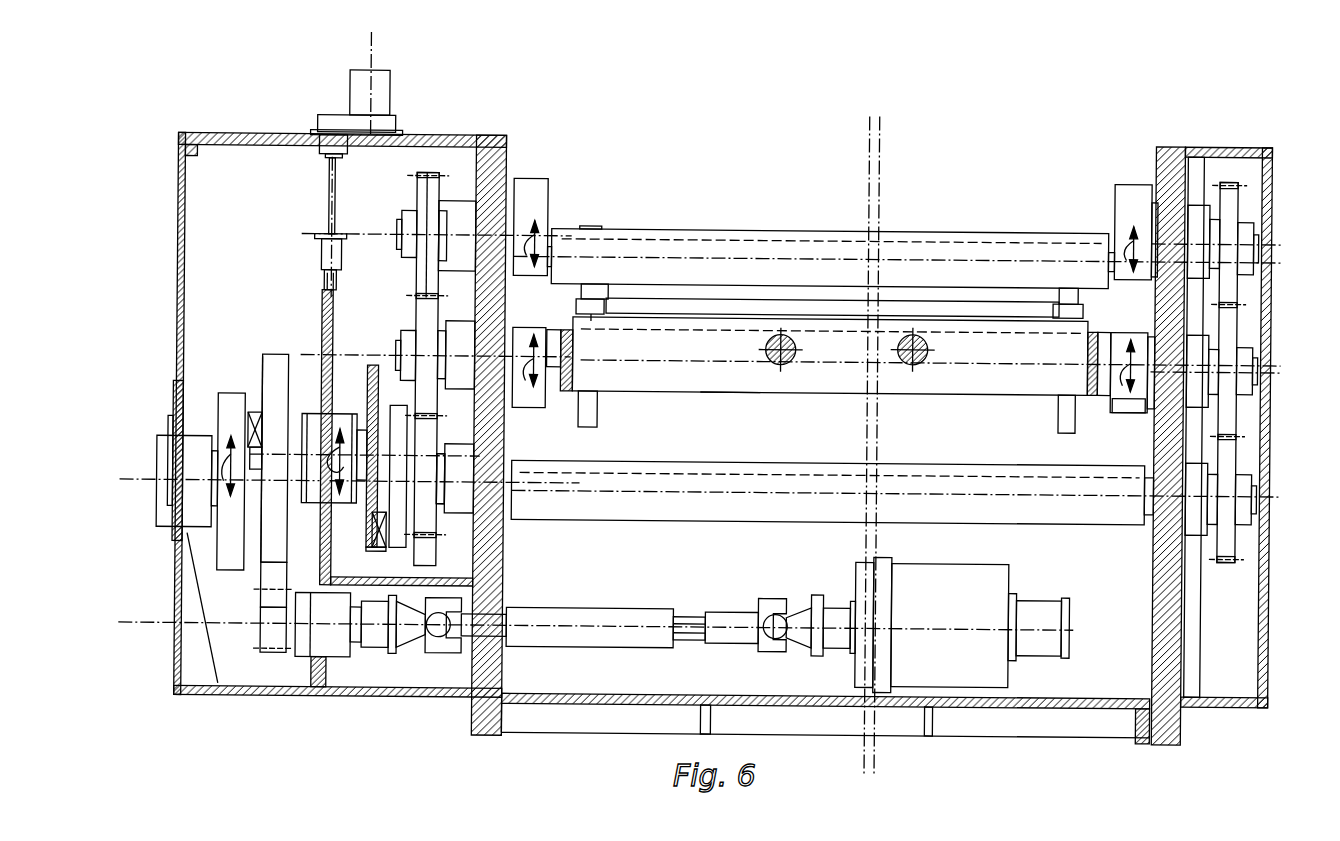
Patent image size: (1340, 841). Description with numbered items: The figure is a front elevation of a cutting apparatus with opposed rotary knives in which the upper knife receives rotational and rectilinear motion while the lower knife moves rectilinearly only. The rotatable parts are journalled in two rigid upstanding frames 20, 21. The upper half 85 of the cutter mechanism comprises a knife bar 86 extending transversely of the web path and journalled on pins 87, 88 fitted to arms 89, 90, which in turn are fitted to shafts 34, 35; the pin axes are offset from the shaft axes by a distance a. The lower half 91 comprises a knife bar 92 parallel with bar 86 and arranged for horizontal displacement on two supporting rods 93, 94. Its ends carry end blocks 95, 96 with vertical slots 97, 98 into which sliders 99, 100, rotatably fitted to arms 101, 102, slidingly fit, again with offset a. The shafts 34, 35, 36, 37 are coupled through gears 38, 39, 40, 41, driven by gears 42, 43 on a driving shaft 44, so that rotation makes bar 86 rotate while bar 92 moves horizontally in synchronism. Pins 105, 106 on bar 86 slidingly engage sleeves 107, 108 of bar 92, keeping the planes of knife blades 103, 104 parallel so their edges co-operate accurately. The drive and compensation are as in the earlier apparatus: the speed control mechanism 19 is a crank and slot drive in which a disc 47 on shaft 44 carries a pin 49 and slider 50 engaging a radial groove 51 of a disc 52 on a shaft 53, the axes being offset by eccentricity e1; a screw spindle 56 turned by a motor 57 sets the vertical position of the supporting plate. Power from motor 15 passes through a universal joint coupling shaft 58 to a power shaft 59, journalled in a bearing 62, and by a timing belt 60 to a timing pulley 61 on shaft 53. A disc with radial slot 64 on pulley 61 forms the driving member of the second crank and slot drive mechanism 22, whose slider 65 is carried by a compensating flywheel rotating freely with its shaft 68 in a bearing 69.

The motor 15 is at (1000, 585).
The speed control mechanism 19 is at (393, 385).
The frame 20 is at (494, 152).
The frame 21 is at (1173, 155).
The second crank and slot drive mechanism 22 is at (238, 378).
The shaft 34 is at (438, 233).
The shaft 35 is at (1218, 233).
The shaft 36 is at (438, 345).
The shaft 37 is at (1228, 382).
The gear 38 is at (423, 190).
The gear 39 is at (1237, 204).
The gear 40 is at (423, 313).
The gear 41 is at (1230, 333).
The gear 42 is at (427, 540).
The gear 43 is at (1228, 553).
The driving shaft 44 is at (722, 512).
The disc 47 is at (393, 543).
The pin 49 is at (378, 554).
The slider 50 is at (378, 533).
The radial groove 51 is at (383, 372).
The disc 52 is at (365, 404).
The shaft 53 is at (298, 435).
The screw spindle 56 is at (327, 173).
The motor 57 is at (385, 86).
The universal joint coupling shaft 58 is at (575, 620).
The power shaft 59 is at (268, 632).
The timing belt 60 is at (270, 586).
The timing pulley 61 is at (282, 362).
The bearing 62 is at (338, 647).
The radial slot 64 is at (260, 385).
The slider 65 is at (245, 425).
The shaft 68 is at (172, 478).
The bearing 69 is at (170, 512).
The upper half of the cutter mechanism 85 is at (762, 205).
The knife bar 86 is at (693, 246).
The pin 87 is at (551, 256).
The pin 88 is at (1107, 260).
The arm 89 is at (530, 178).
The arm 90 is at (1130, 190).
The lower half of the cutter mechanism 91 is at (748, 405).
The knife bar 92 is at (853, 385).
The supporting rod 93 is at (793, 367).
The supporting rod 94 is at (918, 372).
The end block 95 is at (573, 332).
The end block 96 is at (1092, 337).
The vertical slot 97 is at (560, 385).
The vertical slot 98 is at (1102, 395).
The slider 99 is at (550, 343).
The slider 100 is at (1134, 381).
The arm 101 is at (510, 392).
The arm 102 is at (1135, 408).
The knife blade 103 is at (802, 292).
The knife blade 104 is at (703, 312).
The pin 105 is at (592, 294).
The pin 106 is at (1055, 298).
The sleeve 107 is at (600, 318).
The sleeve 108 is at (1060, 316).